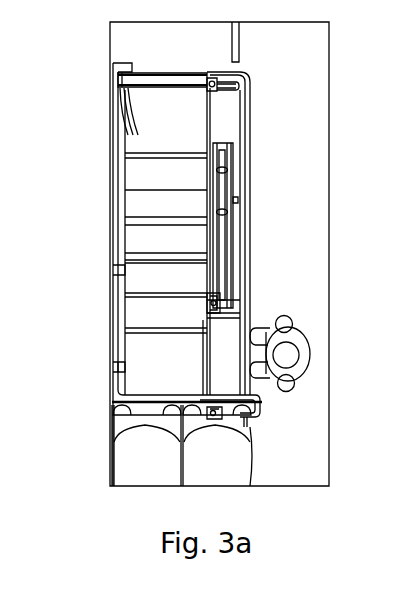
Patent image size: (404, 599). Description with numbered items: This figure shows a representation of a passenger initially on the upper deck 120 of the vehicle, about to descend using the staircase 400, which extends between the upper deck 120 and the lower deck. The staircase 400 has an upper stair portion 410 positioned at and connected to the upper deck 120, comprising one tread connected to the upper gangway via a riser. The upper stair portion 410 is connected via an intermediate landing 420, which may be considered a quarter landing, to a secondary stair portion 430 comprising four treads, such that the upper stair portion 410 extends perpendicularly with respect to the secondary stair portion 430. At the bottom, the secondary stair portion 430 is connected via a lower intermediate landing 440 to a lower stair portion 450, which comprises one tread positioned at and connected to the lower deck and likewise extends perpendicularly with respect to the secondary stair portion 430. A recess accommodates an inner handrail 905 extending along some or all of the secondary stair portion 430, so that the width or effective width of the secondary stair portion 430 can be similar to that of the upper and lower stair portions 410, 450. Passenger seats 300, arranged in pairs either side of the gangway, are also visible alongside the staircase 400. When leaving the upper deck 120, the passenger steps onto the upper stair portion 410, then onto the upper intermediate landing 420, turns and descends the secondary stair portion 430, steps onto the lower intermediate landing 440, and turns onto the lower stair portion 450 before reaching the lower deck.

The staircase 400 is at (112, 210).
The lower intermediate landing 440 is at (187, 127).
The secondary stair portion 430 is at (184, 239).
The intermediate landing 420 is at (187, 373).
The upper deck 120 is at (308, 195).
The lower stair portion 450 is at (228, 118).
The inner handrail 905 is at (220, 237).
The upper stair portion 410 is at (230, 328).
The passenger seats 300 is at (130, 458).